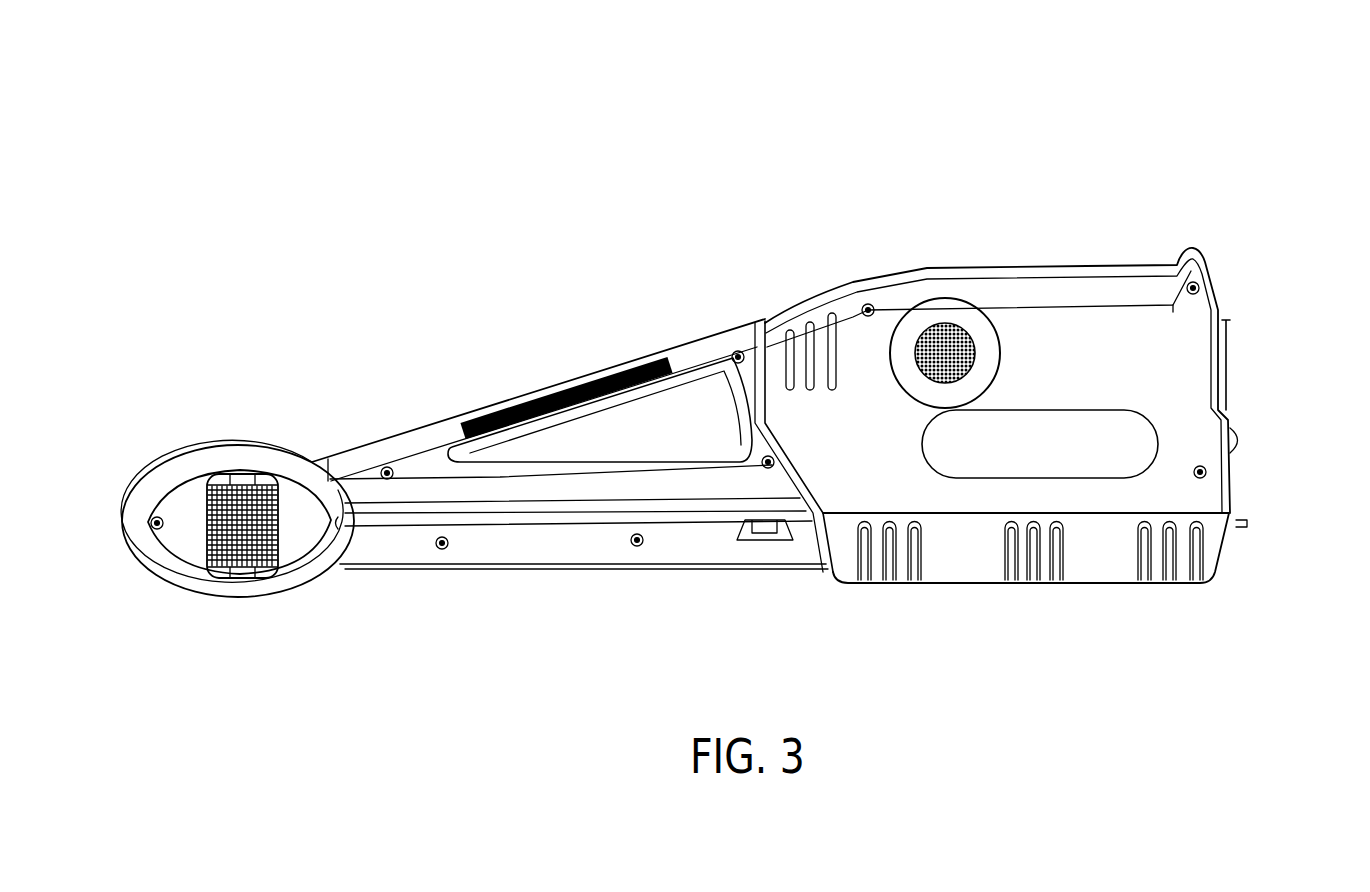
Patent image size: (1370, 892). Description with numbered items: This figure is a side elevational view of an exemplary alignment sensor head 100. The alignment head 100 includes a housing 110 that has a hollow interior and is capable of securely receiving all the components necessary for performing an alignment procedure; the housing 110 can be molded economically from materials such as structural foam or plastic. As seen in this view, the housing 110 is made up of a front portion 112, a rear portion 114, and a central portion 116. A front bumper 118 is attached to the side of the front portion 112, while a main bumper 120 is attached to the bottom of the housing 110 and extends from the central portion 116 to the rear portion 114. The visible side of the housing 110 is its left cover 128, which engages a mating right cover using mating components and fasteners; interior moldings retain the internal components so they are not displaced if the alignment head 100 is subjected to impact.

The alignment sensor head 100 is at (1130, 125).
The housing 110 is at (688, 343).
The front portion 112 is at (208, 435).
The rear portion 114 is at (1234, 342).
The central portion 116 is at (937, 251).
The front bumper 118 is at (217, 572).
The main bumper 120 is at (977, 572).
The left cover 128 is at (1165, 392).